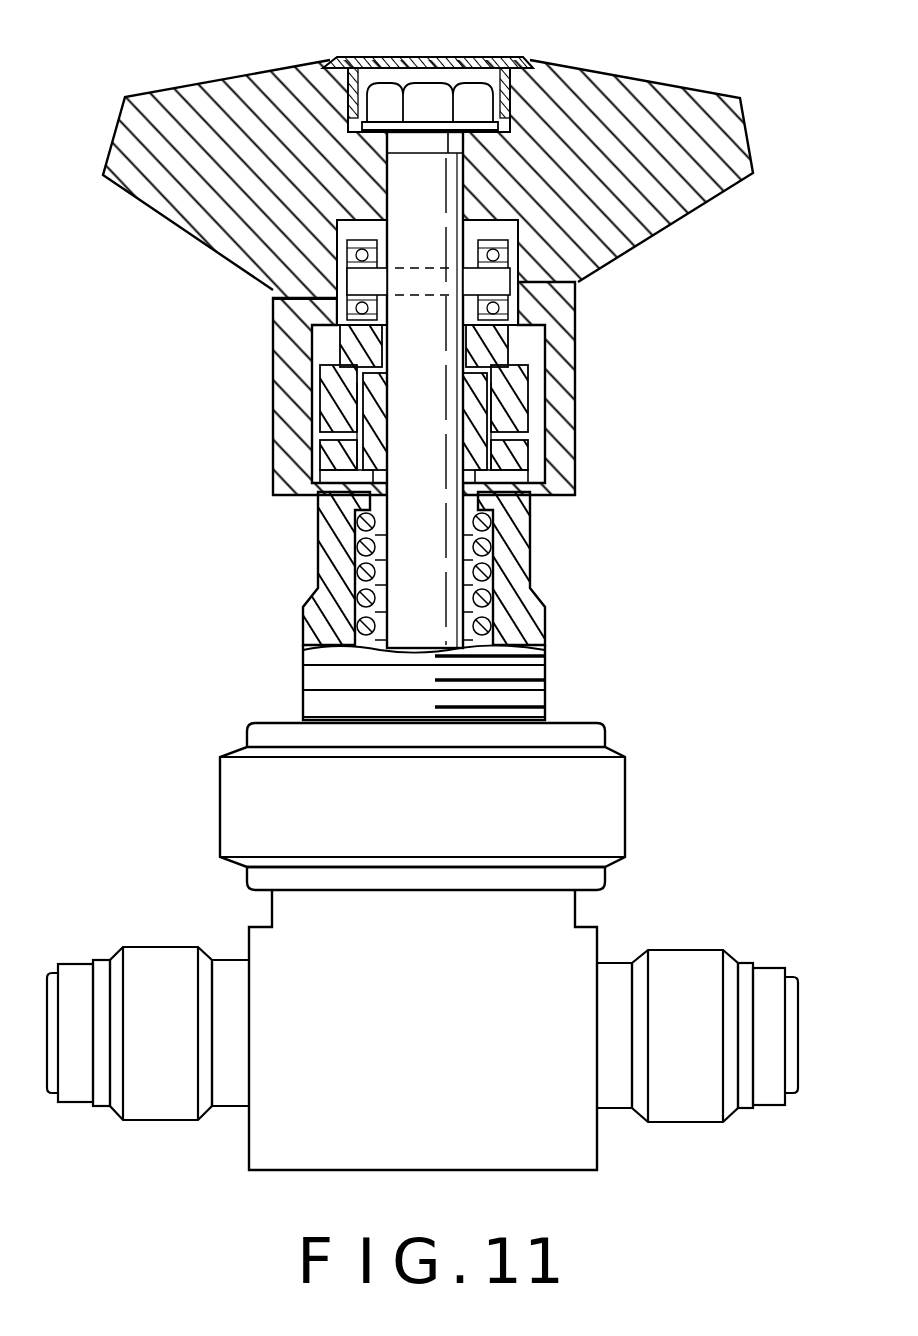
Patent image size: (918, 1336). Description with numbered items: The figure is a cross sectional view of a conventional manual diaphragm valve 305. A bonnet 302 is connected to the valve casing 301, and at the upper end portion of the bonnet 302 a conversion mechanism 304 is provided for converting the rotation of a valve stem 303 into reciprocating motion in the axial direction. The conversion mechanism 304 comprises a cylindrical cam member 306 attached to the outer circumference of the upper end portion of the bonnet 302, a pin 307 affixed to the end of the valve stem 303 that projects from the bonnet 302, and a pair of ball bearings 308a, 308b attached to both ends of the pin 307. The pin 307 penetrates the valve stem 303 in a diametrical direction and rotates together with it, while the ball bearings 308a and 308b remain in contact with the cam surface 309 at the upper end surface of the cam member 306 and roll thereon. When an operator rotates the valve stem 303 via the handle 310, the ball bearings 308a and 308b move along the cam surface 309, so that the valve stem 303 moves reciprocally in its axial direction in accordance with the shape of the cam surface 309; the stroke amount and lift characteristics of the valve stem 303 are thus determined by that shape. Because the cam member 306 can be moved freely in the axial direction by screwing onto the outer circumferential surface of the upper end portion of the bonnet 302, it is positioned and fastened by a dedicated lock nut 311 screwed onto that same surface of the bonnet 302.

The valve casing 301 is at (588, 947).
The bonnet 302 is at (528, 537).
The valve stem 303 is at (407, 535).
The conversion mechanism 304 is at (548, 348).
The diaphragm valve 305 is at (228, 447).
The cylindrical cam member 306 is at (513, 408).
The pin 307 is at (350, 284).
The ball bearing 308a is at (357, 252).
The ball bearing 308b is at (507, 243).
The cam surface 309 is at (348, 348).
The handle 310 is at (630, 90).
The lock nut 311 is at (517, 463).